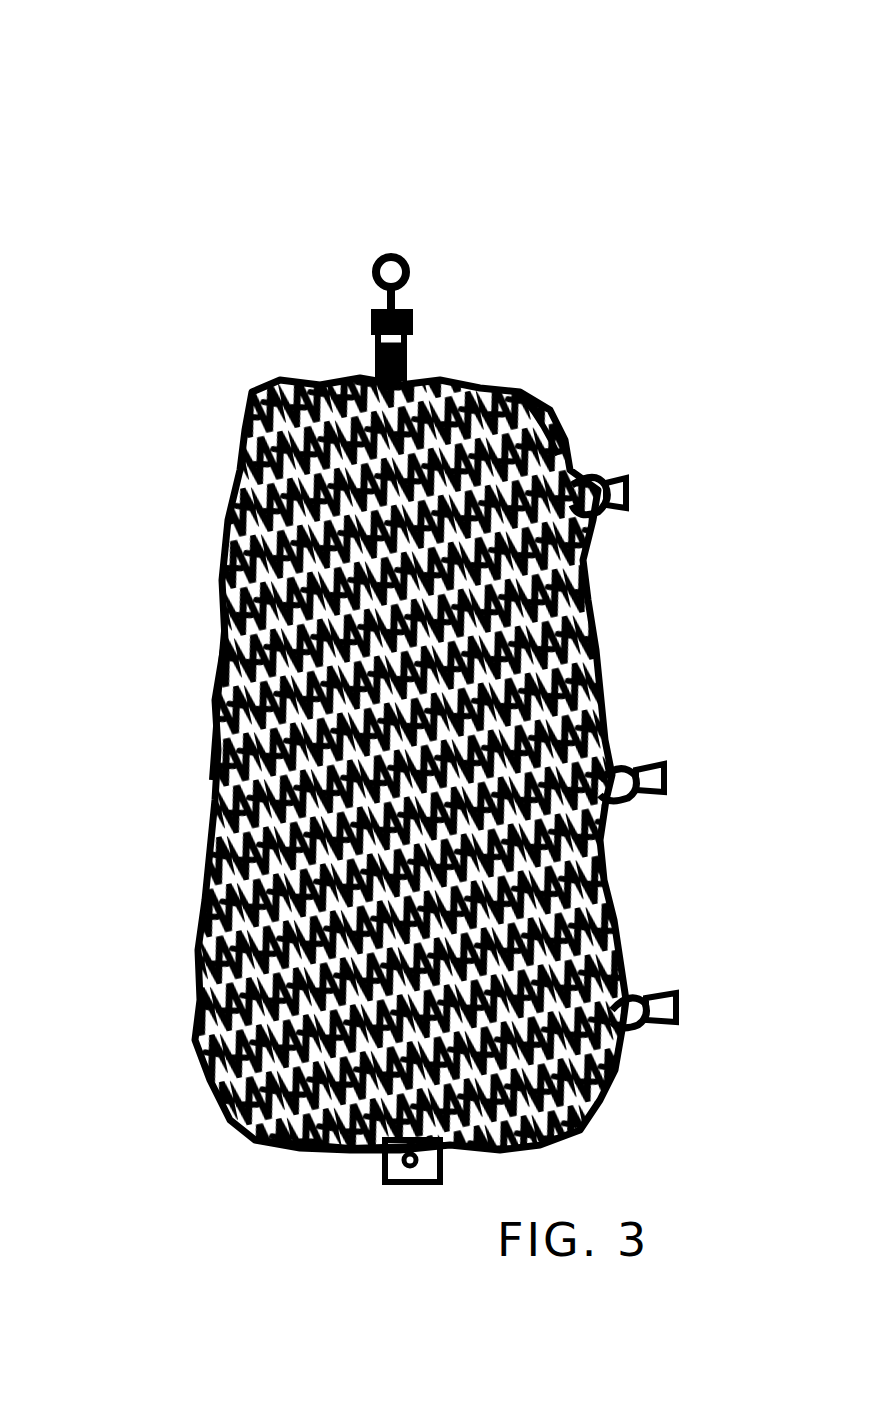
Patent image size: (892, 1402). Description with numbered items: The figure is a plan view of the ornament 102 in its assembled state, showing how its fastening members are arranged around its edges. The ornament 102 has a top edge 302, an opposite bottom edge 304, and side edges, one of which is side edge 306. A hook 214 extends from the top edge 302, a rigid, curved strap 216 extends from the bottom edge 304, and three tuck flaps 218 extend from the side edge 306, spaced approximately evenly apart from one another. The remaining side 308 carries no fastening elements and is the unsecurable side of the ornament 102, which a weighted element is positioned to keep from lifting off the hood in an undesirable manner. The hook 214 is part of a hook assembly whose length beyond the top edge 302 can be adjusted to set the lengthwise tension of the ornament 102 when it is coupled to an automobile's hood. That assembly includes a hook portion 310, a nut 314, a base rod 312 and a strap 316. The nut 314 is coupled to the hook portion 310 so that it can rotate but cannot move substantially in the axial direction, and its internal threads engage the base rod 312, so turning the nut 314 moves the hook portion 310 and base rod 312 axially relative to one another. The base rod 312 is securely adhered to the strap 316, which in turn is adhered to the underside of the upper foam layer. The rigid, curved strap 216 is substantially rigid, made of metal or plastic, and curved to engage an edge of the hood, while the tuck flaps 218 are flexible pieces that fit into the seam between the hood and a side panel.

The ornament 102 is at (590, 120).
The hook 214 is at (374, 255).
The rigid, curved strap 216 is at (367, 1180).
The tuck flaps 218 is at (640, 495).
The top edge 302 is at (250, 396).
The bottom edge 304 is at (247, 1137).
The side edge 306 is at (560, 440).
The unsecurable side 308 is at (215, 705).
The hook portion 310 is at (418, 248).
The base rod 312 is at (415, 368).
The nut 314 is at (422, 312).
The strap 316 is at (402, 340).